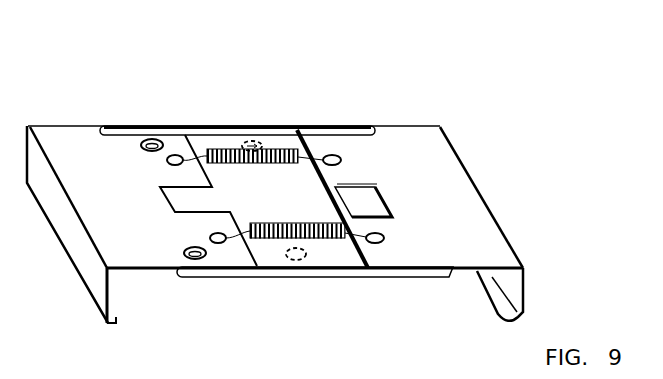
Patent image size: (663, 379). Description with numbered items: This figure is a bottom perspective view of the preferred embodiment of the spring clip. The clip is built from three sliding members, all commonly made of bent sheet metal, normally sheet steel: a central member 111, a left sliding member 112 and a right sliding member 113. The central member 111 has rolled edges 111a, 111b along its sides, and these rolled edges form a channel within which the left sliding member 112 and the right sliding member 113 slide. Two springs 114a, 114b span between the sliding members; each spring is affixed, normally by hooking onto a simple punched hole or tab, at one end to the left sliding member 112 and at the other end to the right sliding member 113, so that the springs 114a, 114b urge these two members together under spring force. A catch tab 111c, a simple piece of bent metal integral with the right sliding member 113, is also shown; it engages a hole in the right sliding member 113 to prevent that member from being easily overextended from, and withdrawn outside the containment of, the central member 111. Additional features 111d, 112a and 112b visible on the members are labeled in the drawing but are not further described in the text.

The central member 111 is at (290, 208).
The rolled edge 111a is at (155, 126).
The rolled edge 111b is at (254, 138).
The catch tab 111c is at (358, 198).
The top edge 111d is at (222, 126).
The left sliding member 112 is at (137, 213).
The lower rail 112a is at (180, 272).
The hidden hole (dashed) 112b is at (297, 262).
The right sliding member 113 is at (453, 215).
The spring 114a is at (297, 130).
The spring 114b is at (338, 240).